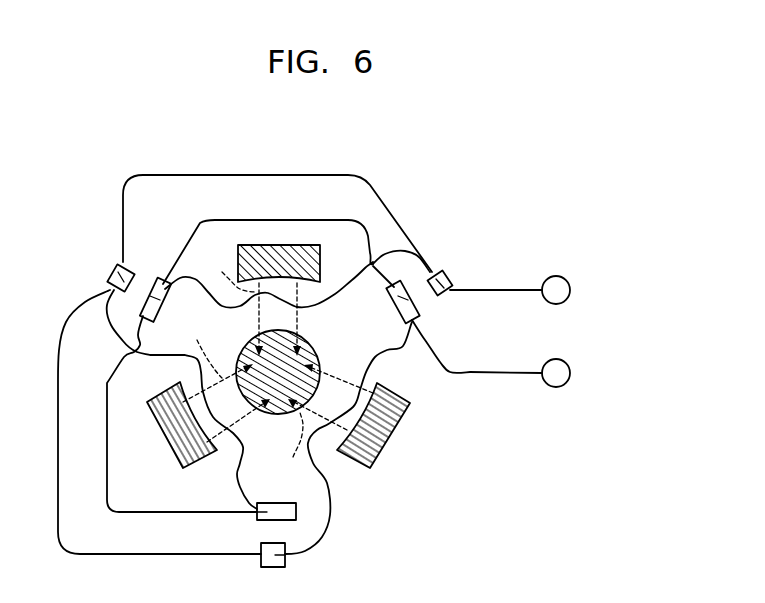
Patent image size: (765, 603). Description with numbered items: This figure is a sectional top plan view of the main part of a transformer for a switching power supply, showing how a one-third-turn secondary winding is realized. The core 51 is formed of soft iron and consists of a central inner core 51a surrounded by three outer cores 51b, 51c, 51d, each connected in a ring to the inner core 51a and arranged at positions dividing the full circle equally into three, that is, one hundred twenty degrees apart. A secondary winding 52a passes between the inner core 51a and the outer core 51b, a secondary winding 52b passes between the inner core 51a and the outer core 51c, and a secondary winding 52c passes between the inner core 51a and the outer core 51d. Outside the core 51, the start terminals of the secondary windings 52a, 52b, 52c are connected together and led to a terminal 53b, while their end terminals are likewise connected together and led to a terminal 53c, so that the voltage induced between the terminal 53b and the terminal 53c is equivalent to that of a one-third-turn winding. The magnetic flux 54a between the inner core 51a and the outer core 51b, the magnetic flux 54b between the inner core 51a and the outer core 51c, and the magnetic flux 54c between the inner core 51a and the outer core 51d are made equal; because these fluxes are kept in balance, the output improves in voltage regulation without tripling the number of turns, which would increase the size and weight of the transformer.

The core 51 is at (418, 375).
The inner core 51a is at (310, 353).
The outer core 51b is at (400, 437).
The outer core 51c is at (170, 428).
The outer core 51d is at (237, 249).
The secondary winding 52a is at (313, 438).
The secondary winding 52b is at (236, 443).
The secondary winding 52c is at (318, 300).
The terminal 53b is at (570, 373).
The terminal 53c is at (570, 290).
The magnetic flux 54a is at (278, 445).
The magnetic flux 54b is at (203, 345).
The magnetic flux 54c is at (220, 272).